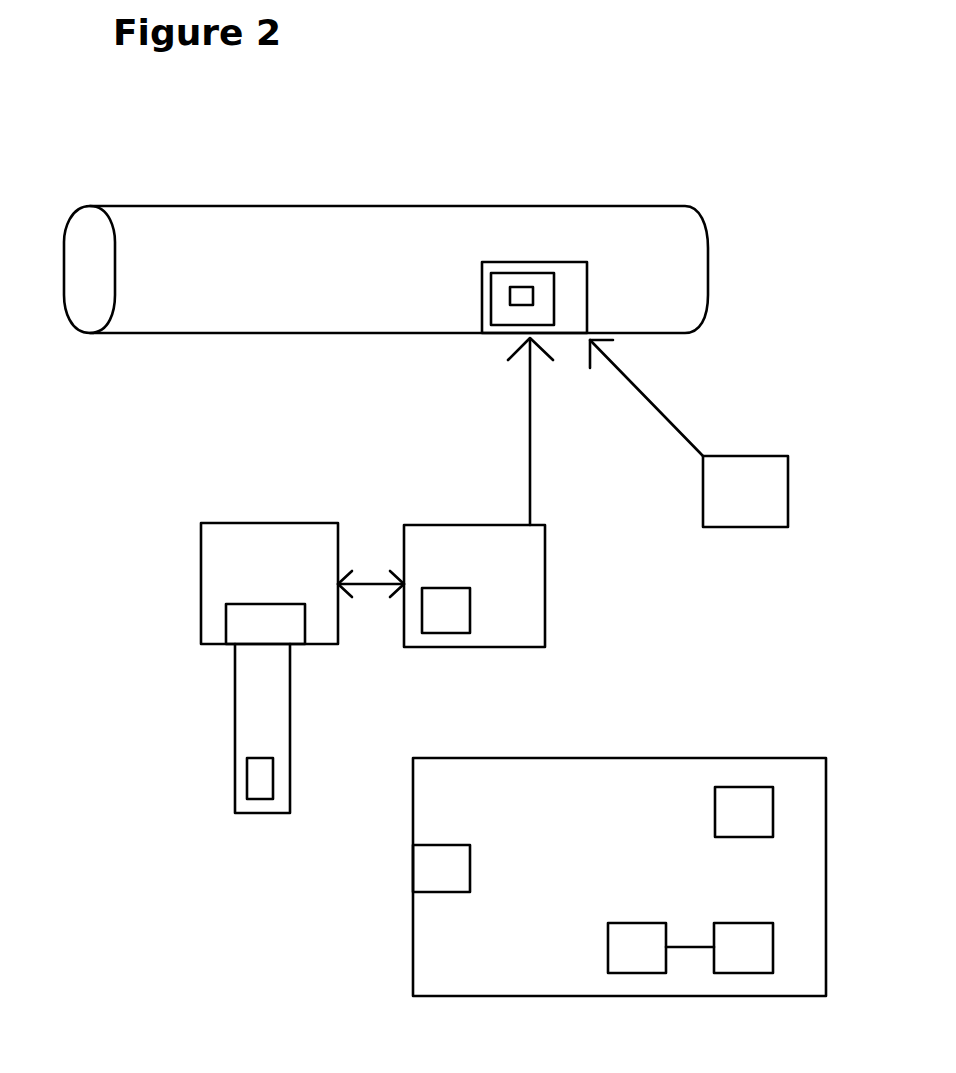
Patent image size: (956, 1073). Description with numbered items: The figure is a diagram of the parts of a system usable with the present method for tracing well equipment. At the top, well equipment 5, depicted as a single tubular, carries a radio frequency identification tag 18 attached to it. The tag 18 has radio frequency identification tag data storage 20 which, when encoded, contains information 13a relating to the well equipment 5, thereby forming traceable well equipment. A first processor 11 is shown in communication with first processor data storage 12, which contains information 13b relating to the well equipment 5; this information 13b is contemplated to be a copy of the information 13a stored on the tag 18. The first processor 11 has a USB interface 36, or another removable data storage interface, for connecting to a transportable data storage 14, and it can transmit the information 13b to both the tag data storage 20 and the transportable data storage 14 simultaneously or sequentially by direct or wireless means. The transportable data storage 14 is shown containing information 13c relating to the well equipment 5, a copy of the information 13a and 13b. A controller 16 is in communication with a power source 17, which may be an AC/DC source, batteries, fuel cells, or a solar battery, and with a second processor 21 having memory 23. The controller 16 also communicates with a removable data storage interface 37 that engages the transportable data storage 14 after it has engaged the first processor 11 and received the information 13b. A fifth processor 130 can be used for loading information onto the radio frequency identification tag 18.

The well equipment 5 is at (150, 333).
The first processor 11 is at (201, 568).
The first processor data storage 12 is at (430, 525).
The information 13a is at (510, 294).
The information 13b is at (445, 633).
The information 13c is at (265, 813).
The transportable data storage 14 is at (233, 762).
The controller 16 is at (670, 758).
The power source 17 is at (715, 810).
The radio frequency identification tag 18 is at (581, 334).
The radio frequency identification tag data storage 20 is at (499, 334).
The second processor 21 is at (732, 923).
The memory 23 is at (640, 923).
The USB interface 36 is at (226, 620).
The removable data storage interface 37 is at (470, 865).
The fifth processor 130 is at (762, 456).